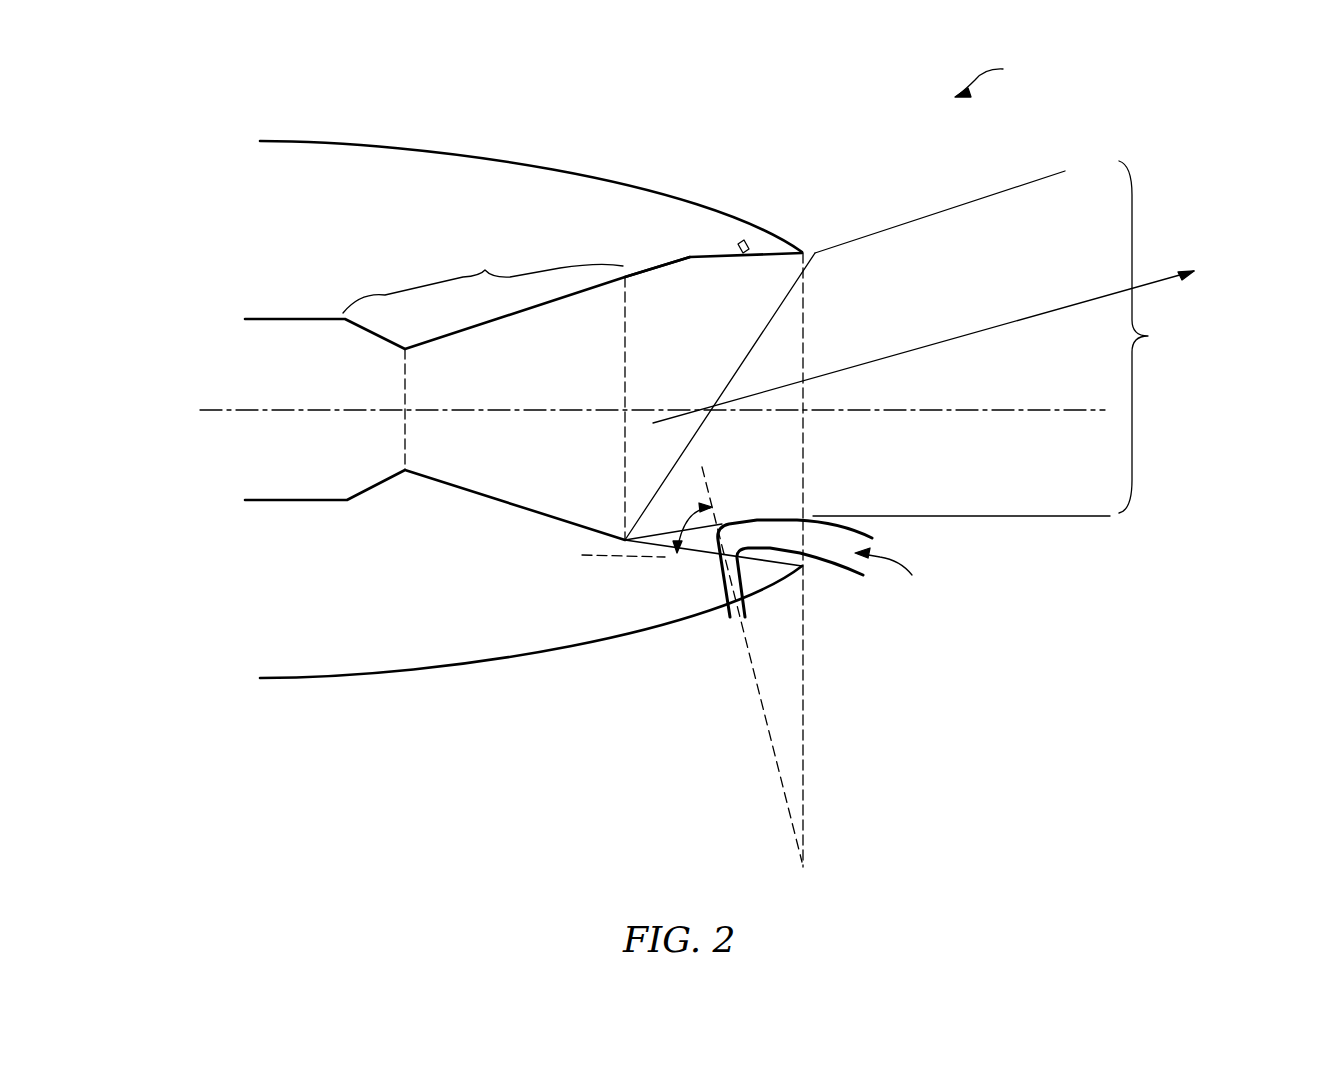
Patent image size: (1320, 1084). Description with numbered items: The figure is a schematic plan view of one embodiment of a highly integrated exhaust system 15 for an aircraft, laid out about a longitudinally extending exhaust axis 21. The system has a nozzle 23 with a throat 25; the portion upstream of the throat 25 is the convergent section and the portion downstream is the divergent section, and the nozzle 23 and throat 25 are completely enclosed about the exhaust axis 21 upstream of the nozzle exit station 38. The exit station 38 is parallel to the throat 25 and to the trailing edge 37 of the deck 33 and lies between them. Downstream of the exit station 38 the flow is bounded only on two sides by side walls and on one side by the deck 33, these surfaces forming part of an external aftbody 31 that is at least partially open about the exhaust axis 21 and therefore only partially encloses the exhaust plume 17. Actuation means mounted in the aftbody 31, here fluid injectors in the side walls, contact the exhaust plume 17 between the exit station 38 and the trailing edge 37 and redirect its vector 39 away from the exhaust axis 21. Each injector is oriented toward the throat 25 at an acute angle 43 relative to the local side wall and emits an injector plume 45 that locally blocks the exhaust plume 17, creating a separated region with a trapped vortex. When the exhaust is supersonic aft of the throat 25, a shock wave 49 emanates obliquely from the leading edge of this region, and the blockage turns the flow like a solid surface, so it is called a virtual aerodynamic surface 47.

The highly integrated exhaust system 15 is at (1000, 74).
The exhaust plume 17 is at (999, 338).
The exhaust axis 21 is at (975, 404).
The nozzle 23 is at (523, 389).
The throat 25 is at (405, 386).
The external aftbody 31 is at (712, 210).
The deck 33 is at (782, 455).
The trailing edge 37 is at (805, 342).
The nozzle exit station 38 is at (624, 420).
The vector 39 is at (1165, 274).
The acute angle 43 is at (703, 532).
The injector plume 45 is at (899, 570).
The virtual aerodynamic surface 47 is at (670, 558).
The shock wave 49 is at (752, 348).